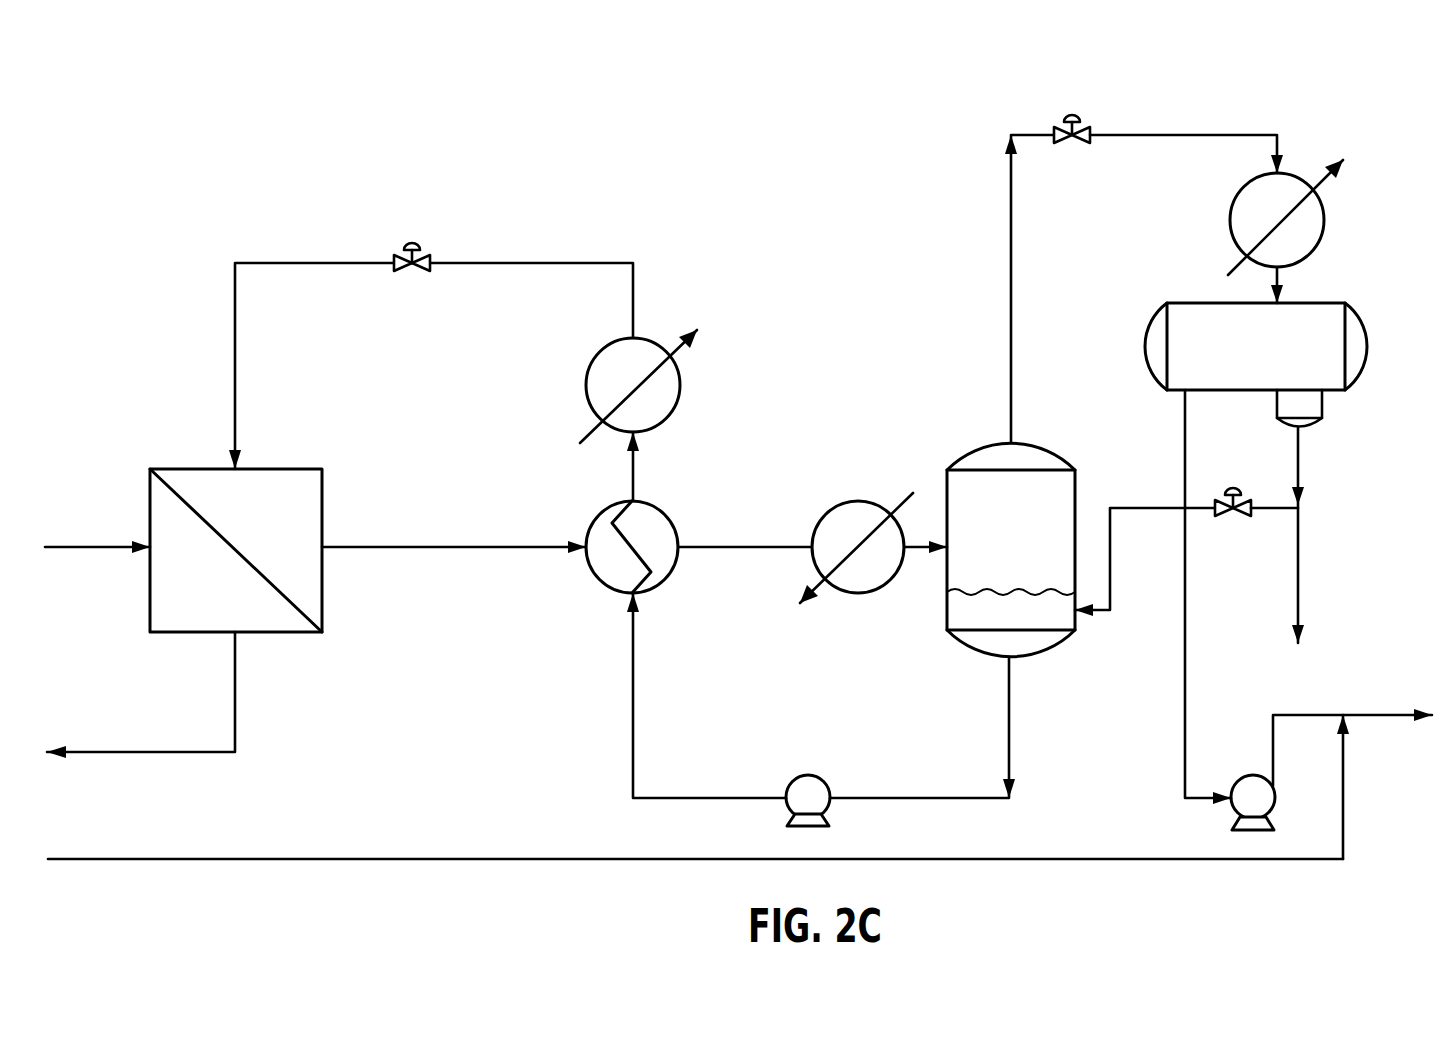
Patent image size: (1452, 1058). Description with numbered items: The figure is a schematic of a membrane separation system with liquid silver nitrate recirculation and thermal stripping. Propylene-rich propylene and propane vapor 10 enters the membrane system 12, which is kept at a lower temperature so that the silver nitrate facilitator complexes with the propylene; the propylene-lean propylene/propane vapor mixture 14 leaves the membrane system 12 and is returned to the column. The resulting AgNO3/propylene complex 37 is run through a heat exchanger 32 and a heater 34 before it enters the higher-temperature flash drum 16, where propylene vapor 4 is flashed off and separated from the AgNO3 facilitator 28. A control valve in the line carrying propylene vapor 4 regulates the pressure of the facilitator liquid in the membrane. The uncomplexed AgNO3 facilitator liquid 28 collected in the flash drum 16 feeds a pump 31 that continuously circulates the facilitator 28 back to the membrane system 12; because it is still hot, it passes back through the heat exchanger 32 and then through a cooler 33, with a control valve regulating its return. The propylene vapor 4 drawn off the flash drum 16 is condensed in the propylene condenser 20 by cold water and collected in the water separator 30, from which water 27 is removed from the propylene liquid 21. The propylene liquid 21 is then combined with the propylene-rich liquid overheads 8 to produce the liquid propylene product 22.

The propylene vapor 4 is at (1012, 385).
The propylene liquid overheads 8 is at (432, 858).
The propylene and propane vapor 10 is at (106, 546).
The membrane system 12 is at (168, 468).
The propylene-lean propylene/propane vapor mixture 14 is at (212, 754).
The flash drum 16 is at (946, 470).
The propylene condenser 20 is at (1325, 245).
The propylene liquid 21 is at (1185, 604).
The liquid propylene product 22 is at (1390, 715).
The water 27 is at (1136, 508).
The AgNO3 facilitator 28 is at (235, 348).
The water separator 30 is at (1252, 392).
The pump 31 is at (828, 790).
The heat exchanger 32 is at (667, 575).
The cooler 33 is at (672, 415).
The heater 34 is at (815, 520).
The AgNO3/propylene complex 37 is at (400, 548).